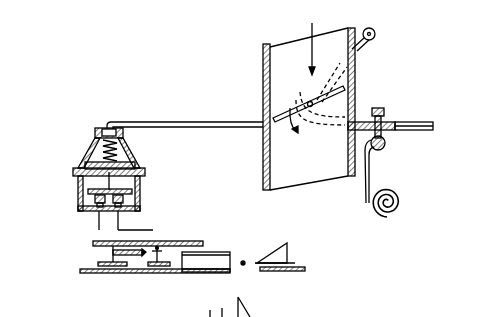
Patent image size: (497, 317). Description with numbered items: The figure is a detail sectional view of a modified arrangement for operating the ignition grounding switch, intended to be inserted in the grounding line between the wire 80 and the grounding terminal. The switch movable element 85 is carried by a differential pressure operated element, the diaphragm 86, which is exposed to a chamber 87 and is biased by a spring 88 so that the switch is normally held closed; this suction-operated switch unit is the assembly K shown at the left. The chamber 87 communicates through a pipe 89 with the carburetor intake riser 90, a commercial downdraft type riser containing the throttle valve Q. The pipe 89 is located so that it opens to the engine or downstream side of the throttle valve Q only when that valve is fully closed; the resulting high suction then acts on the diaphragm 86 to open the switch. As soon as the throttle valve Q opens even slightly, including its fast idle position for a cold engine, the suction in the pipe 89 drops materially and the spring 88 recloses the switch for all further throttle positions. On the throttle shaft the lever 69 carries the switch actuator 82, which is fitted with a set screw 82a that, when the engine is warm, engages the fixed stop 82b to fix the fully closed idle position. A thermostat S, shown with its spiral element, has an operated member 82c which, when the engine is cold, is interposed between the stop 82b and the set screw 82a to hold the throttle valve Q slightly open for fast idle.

The lever 69 is at (377, 37).
The wire 80 is at (99, 230).
The switch actuator 82 is at (401, 114).
The set screw 82a is at (386, 119).
The fixed stop 82b is at (386, 148).
The operated member 82c is at (346, 150).
The switch movable element 85 is at (142, 193).
The diaphragm 86 is at (124, 165).
The chamber 87 is at (120, 153).
The spring 88 is at (92, 153).
The pipe 89 is at (235, 122).
The carburetor intake riser 90 is at (358, 111).
The thermostat K is at (104, 179).
The throttle valve Q is at (283, 115).
The thermostat S is at (371, 208).